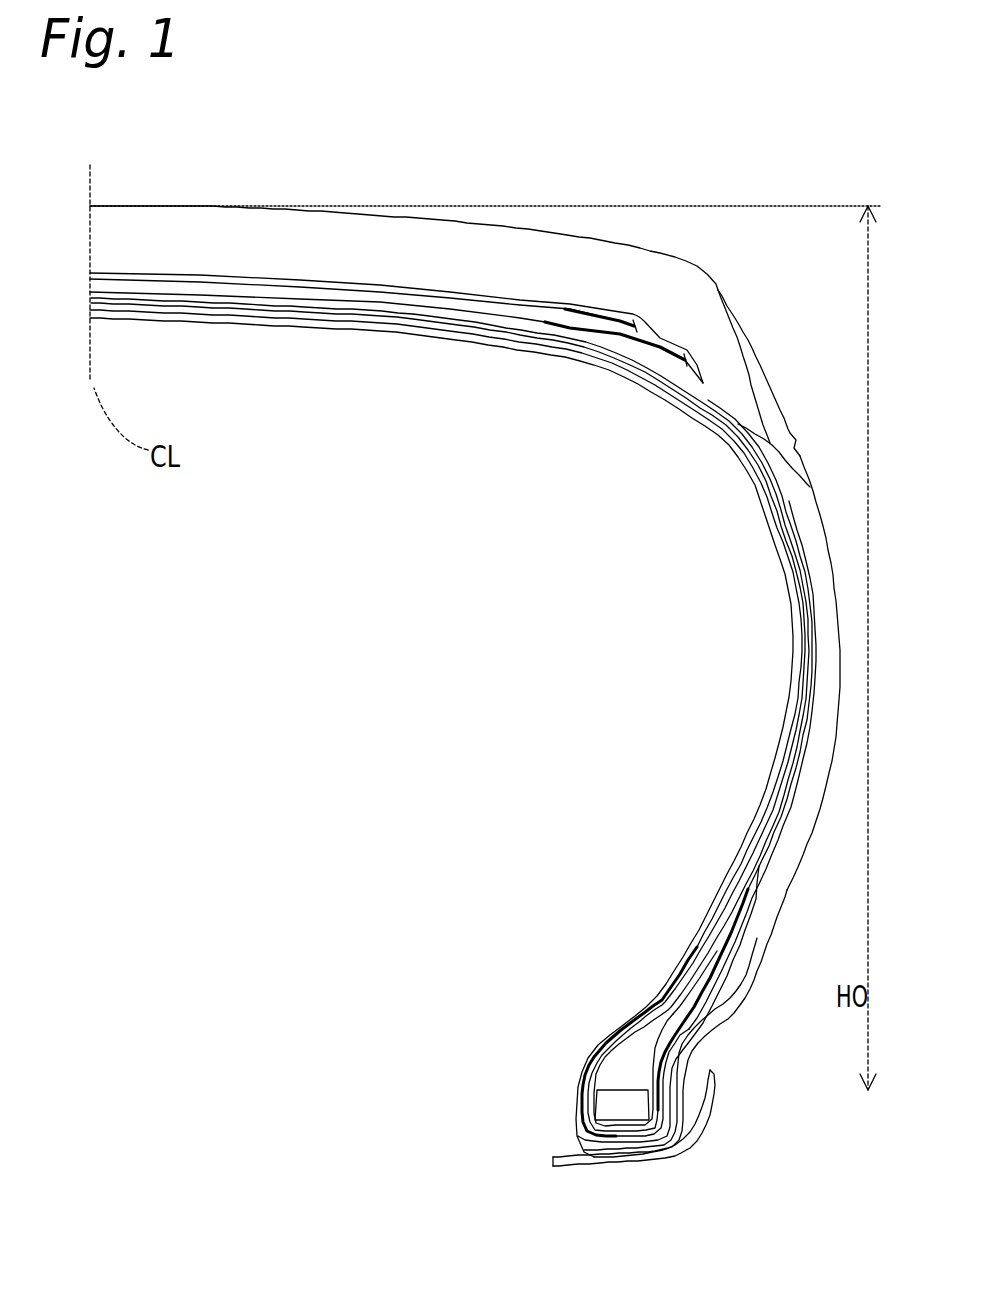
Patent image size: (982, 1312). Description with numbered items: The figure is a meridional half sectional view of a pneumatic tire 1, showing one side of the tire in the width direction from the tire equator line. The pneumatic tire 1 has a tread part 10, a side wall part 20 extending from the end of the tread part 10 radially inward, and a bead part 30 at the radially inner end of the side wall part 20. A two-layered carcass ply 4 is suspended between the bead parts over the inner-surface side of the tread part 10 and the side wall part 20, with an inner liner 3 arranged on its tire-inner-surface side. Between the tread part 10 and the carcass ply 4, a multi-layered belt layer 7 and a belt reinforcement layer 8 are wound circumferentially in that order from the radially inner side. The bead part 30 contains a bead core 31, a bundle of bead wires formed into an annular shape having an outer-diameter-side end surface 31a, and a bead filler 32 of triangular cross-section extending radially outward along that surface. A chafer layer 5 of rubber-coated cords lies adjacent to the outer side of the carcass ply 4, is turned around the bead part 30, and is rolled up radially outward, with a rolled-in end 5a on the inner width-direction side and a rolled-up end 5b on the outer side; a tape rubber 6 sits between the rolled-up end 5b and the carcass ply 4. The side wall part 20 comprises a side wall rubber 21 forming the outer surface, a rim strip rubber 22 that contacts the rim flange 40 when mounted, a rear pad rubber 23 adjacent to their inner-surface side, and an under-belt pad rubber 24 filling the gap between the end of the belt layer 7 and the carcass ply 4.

The pneumatic tire 1 is at (363, 173).
The tread part 10 is at (197, 223).
The side wall part 20 is at (817, 517).
The side wall rubber 21 is at (815, 790).
The rim strip rubber 22 is at (712, 1018).
The rear pad rubber 23 is at (717, 978).
The under-belt pad rubber 24 is at (697, 386).
The inner liner 3 is at (675, 397).
The carcass ply 4 is at (703, 940).
The chafer layer 5 is at (630, 1012).
The rolled-in end 5a is at (672, 950).
The rolled-up end 5b is at (652, 984).
The tape rubber 6 is at (735, 932).
The belt layer 7 is at (414, 302).
The belt reinforcement layer 8 is at (662, 331).
The bead part 30 is at (490, 1086).
The bead core 31 is at (608, 1105).
The outer-diameter-side end surface 31a is at (670, 1077).
The bead filler 32 is at (628, 1068).
The rim flange 40 is at (676, 1136).